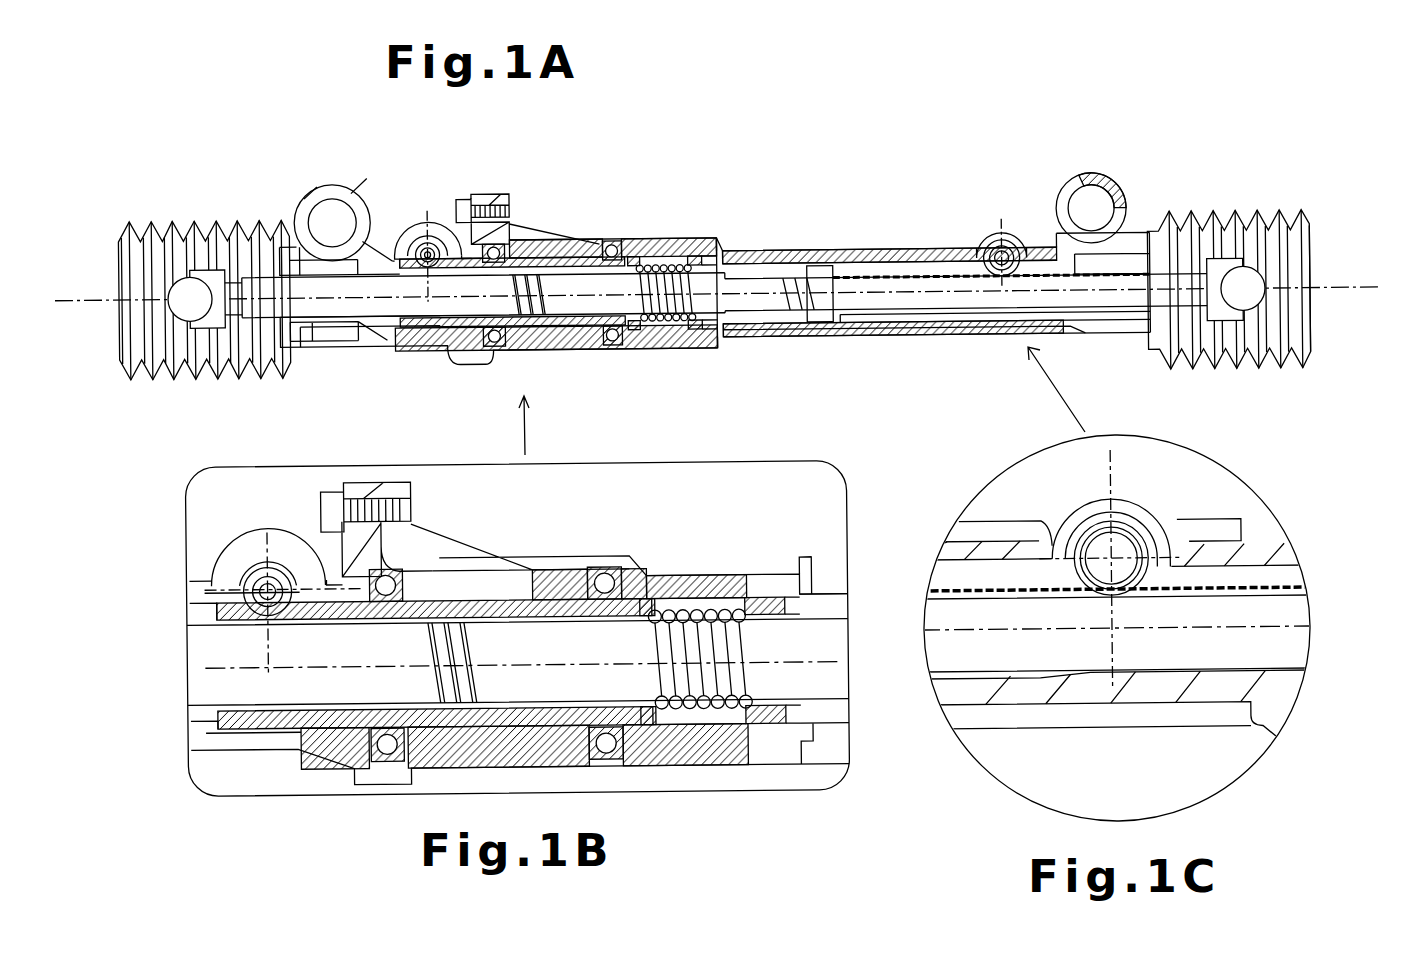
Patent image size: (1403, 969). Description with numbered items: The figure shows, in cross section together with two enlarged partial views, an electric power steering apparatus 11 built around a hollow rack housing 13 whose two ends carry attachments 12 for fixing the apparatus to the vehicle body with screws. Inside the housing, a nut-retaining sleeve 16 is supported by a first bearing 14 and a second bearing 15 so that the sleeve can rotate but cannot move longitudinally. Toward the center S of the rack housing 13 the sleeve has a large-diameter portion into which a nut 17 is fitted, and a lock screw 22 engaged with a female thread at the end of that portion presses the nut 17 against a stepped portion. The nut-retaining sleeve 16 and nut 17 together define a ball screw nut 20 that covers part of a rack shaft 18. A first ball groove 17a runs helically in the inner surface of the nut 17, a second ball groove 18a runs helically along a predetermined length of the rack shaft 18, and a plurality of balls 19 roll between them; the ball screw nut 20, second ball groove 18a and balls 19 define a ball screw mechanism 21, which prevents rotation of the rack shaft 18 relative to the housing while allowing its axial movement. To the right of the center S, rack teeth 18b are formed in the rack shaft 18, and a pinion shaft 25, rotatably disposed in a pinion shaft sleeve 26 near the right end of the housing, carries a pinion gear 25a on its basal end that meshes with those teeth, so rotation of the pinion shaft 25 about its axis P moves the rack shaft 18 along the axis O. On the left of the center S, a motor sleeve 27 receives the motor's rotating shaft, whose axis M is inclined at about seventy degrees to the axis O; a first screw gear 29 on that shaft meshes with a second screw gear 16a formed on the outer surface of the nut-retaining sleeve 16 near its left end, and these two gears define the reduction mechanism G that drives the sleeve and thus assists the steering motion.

In FIG. 1A, the electric power steering apparatus 11 is at (748, 132).
In FIG. 1A, the attachments 12 is at (339, 181).
In FIG. 1A, the rack housing 13 is at (775, 252).
In FIG. 1B, the rack housing 13 is at (518, 662).
In FIG. 1C, the rack housing 13 is at (1118, 629).
In FIG. 1A, the first bearing 14 is at (608, 240).
In FIG. 1B, the first bearing 14 is at (607, 565).
In FIG. 1A, the second bearing 15 is at (496, 242).
In FIG. 1B, the second bearing 15 is at (404, 562).
In FIG. 1A, the nut-retaining sleeve 16 is at (543, 352).
In FIG. 1B, the nut-retaining sleeve 16 is at (778, 726).
In FIG. 1A, the second screw gear 16a is at (425, 336).
In FIG. 1B, the second screw gear 16a is at (258, 735).
In FIG. 1A, the nut 17 is at (642, 262).
In FIG. 1B, the nut 17 is at (680, 612).
In FIG. 1A, the first ball groove 17a is at (690, 250).
In FIG. 1B, the first ball groove 17a is at (745, 612).
In FIG. 1A, the rack shaft 18 is at (765, 330).
In FIG. 1C, the rack shaft 18 is at (1118, 707).
In FIG. 1A, the second ball groove 18a is at (638, 338).
In FIG. 1B, the second ball groove 18a is at (686, 716).
In FIG. 1A, the rack teeth 18b is at (891, 251).
In FIG. 1A, the balls 19 is at (680, 338).
In FIG. 1B, the balls 19 is at (730, 716).
In FIG. 1A, the ball screw nut 20 is at (569, 247).
In FIG. 1B, the ball screw nut 20 is at (506, 588).
In FIG. 1A, the ball screw mechanism 21 is at (676, 269).
In FIG. 1B, the ball screw mechanism 21 is at (719, 634).
In FIG. 1A, the lock screw 22 is at (718, 335).
In FIG. 1B, the lock screw 22 is at (800, 580).
In FIG. 1A, the pinion shaft 25 is at (1003, 240).
In FIG. 1C, the pinion shaft 25 is at (1140, 522).
In FIG. 1A, the pinion gear 25a is at (1025, 240).
In FIG. 1C, the pinion gear 25a is at (1152, 527).
In FIG. 1A, the pinion shaft sleeve 26 is at (977, 250).
In FIG. 1C, the pinion shaft sleeve 26 is at (1058, 512).
In FIG. 1A, the motor sleeve 27 is at (440, 218).
In FIG. 1B, the motor sleeve 27 is at (292, 543).
In FIG. 1A, the first screw gear 29 is at (420, 222).
In FIG. 1B, the first screw gear 29 is at (262, 537).
In FIG. 1A, the reduction mechanism G is at (405, 208).
In FIG. 1A, the center S is at (722, 288).
In FIG. 1B, the center S is at (805, 655).
In FIG. 1A, the axis of the motor M is at (400, 291).
In FIG. 1B, the axis of the motor M is at (228, 649).
In FIG. 1A, the axis of the pinion shaft P is at (980, 205).
In FIG. 1C, the axis of the pinion shaft P is at (1059, 471).
In FIG. 1A, the axis of the rack housing O is at (1340, 292).